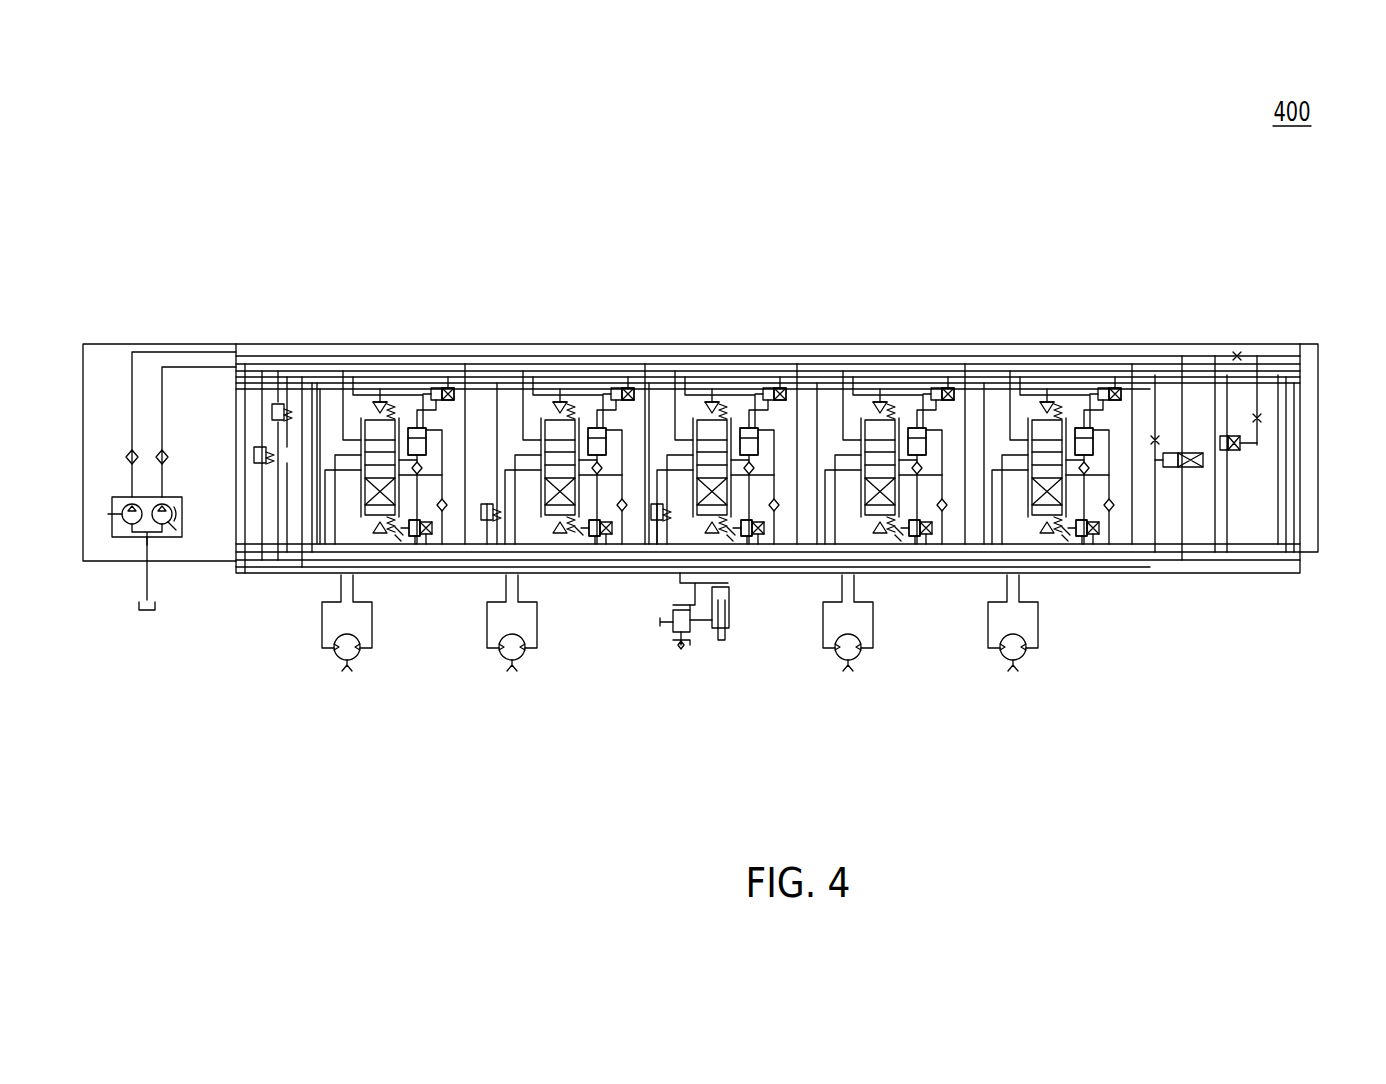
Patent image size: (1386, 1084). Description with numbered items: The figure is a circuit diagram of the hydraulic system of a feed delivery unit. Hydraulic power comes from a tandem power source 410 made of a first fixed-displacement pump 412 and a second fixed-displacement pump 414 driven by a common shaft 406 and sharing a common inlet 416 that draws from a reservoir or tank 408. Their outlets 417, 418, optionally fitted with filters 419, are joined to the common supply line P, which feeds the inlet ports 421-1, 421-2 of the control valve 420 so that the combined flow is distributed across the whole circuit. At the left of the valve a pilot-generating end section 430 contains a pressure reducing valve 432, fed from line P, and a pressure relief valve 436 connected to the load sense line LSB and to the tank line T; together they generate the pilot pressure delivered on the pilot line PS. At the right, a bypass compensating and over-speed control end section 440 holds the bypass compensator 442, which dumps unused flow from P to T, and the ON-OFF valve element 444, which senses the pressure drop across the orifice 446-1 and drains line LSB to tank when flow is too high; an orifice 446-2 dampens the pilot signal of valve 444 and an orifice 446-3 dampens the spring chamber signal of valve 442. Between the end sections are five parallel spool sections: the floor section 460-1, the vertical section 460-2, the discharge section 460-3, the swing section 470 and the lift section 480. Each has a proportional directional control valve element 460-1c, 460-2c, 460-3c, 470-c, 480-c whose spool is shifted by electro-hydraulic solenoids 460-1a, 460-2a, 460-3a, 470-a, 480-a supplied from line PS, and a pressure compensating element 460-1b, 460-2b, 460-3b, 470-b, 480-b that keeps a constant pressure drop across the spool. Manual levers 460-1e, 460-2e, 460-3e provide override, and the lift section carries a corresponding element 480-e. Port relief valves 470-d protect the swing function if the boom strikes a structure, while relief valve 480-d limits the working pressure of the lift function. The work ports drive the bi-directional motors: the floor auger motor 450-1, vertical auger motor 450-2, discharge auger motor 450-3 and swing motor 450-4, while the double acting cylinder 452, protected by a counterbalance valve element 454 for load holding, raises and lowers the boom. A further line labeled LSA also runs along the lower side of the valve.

The common shaft 406 is at (113, 526).
The reservoir or tank 408 is at (143, 615).
The hydraulic power source 410 is at (183, 522).
The first fixed-displacement pump 412 is at (126, 506).
The second fixed-displacement pump 414 is at (168, 525).
The common inlet 416 is at (143, 545).
The outlet of first pump 417 is at (126, 492).
The outlet of second pump 418 is at (165, 493).
The filters 419 is at (158, 455).
The control valve 420 is at (840, 150).
The inlet port 421-1 is at (230, 358).
The inlet port 421-2 is at (1306, 355).
The pilot-generating end section 430 is at (275, 356).
The pressure reducing valve 432 is at (254, 452).
The pressure relief valve 436 is at (290, 402).
The bypass compensating and HOC end section 440 is at (1198, 355).
The bypass compensating valve element 442 is at (1190, 468).
The ON-OFF valve element 444 is at (1237, 450).
The orifice 446-1 is at (1240, 355).
The orifice 446-2 is at (1262, 426).
The orifice 446-3 is at (1153, 448).
The floor auger motor 450-1 is at (322, 660).
The vertical auger motor 450-2 is at (862, 660).
The discharge auger motor 450-3 is at (1032, 660).
The swing motor 450-4 is at (490, 660).
The double acting cylinder 452 is at (735, 634).
The counterbalance valve element 454 is at (697, 642).
The first spool section 460-1 is at (418, 356).
The electro-hydraulic solenoids 460-1a is at (447, 388).
The pressure compensating element 460-1b is at (415, 428).
The directional control valve element 460-1c is at (365, 420).
The manual lever 460-1e is at (397, 540).
The second spool section 460-2 is at (885, 356).
The electro-hydraulic solenoids 460-2a is at (948, 388).
The pressure compensating element 460-2b is at (917, 428).
The directional control valve element 460-2c is at (878, 400).
The manual lever 460-2e is at (898, 540).
The third spool section 460-3 is at (1052, 356).
The electro-hydraulic solenoids 460-3a is at (1115, 388).
The pressure compensating element 460-3b is at (1084, 428).
The directional control valve element 460-3c is at (1045, 400).
The manual lever 460-3e is at (1065, 540).
The fourth spool section 470 is at (563, 356).
The electro-hydraulic solenoids 470-a is at (628, 388).
The pressure compensating element 470-b is at (595, 428).
The directional control valve element 470-c is at (552, 400).
The port relief valves 470-d is at (485, 490).
The fifth spool section 480 is at (718, 356).
The electro-hydraulic solenoids 480-a is at (780, 388).
The pressure compensating element 480-b is at (749, 428).
The directional control valve element 480-c is at (710, 400).
The port relief valve 480-d is at (657, 492).
The detent 480-e is at (730, 545).
The load sense port A LSA is at (246, 575).
The load sense line LSB is at (247, 371).
The common supply line P is at (236, 348).
The pilot line PS is at (306, 372).
The tank line T is at (262, 575).